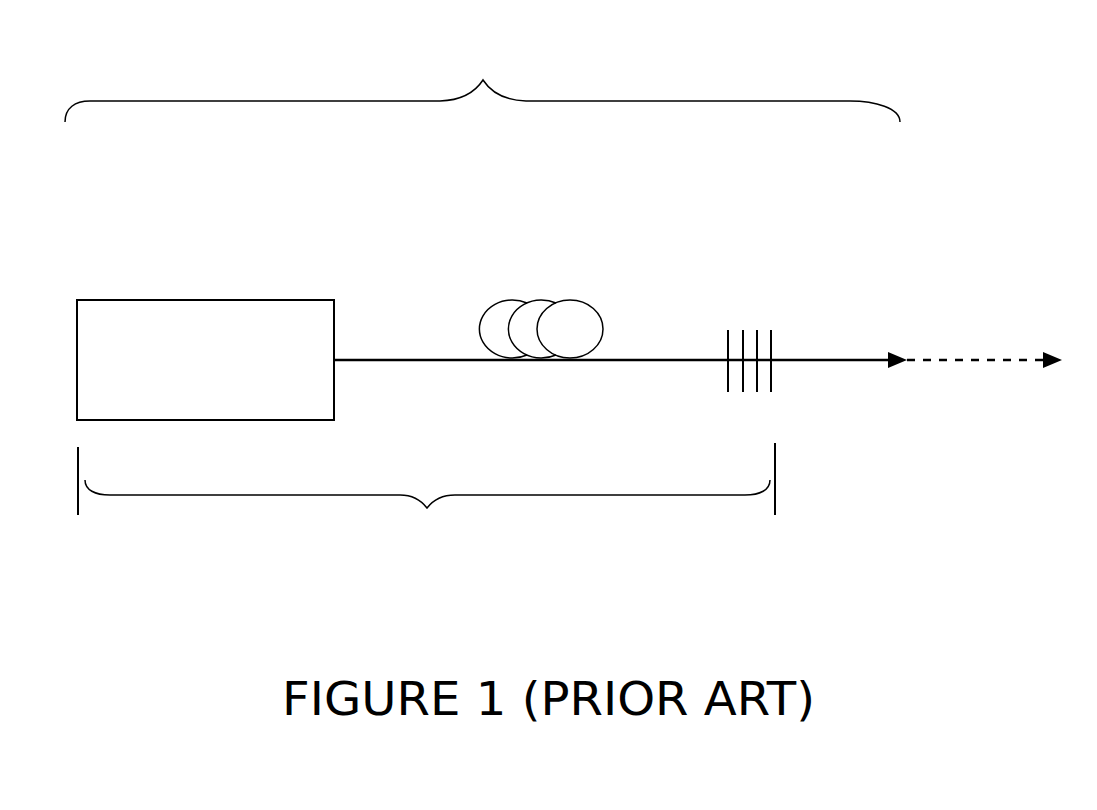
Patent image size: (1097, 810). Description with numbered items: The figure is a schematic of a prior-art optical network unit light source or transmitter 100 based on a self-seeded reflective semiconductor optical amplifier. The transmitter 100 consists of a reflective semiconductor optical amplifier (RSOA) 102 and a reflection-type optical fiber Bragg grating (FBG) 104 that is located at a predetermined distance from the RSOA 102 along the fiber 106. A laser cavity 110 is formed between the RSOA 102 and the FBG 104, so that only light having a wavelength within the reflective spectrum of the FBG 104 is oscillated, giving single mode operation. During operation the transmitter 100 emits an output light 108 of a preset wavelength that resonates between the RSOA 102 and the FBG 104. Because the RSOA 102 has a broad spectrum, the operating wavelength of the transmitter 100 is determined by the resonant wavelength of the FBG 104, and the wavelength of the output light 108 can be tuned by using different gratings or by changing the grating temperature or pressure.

The ONU light source or transmitter 100 is at (482, 77).
The reflective semiconductor optical amplifier (RSOA) 102 is at (178, 298).
The reflection-type optical fiber Bragg grating (FBG) 104 is at (780, 310).
The fiber 106 is at (643, 360).
The output light 108 is at (973, 357).
The laser cavity 110 is at (426, 499).